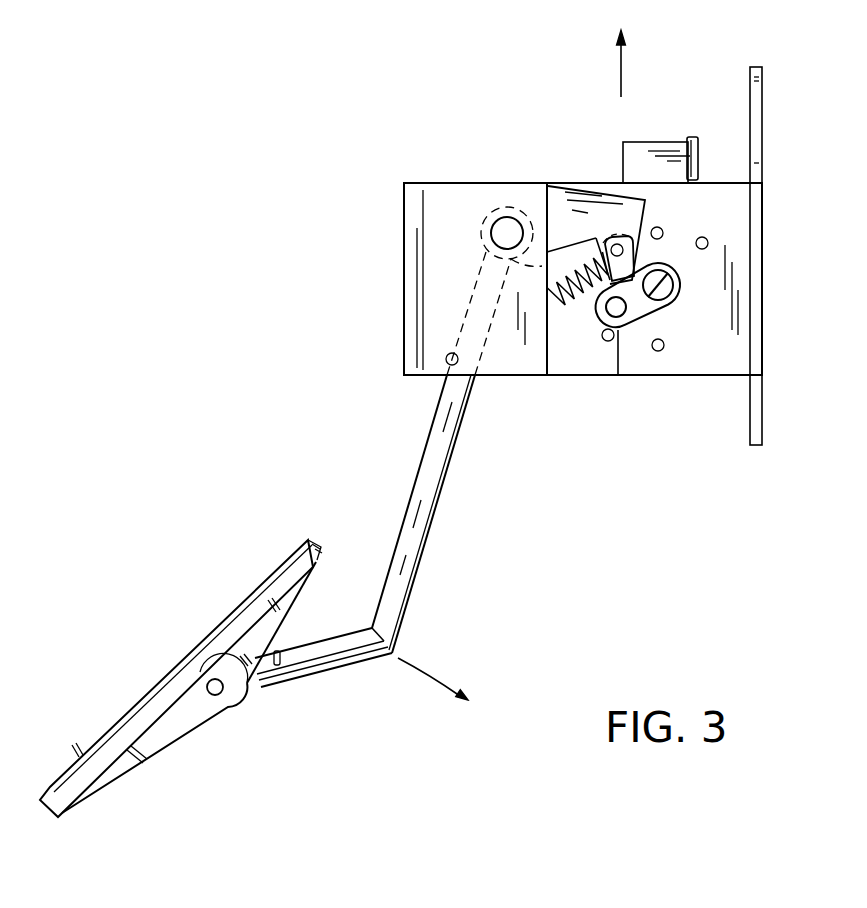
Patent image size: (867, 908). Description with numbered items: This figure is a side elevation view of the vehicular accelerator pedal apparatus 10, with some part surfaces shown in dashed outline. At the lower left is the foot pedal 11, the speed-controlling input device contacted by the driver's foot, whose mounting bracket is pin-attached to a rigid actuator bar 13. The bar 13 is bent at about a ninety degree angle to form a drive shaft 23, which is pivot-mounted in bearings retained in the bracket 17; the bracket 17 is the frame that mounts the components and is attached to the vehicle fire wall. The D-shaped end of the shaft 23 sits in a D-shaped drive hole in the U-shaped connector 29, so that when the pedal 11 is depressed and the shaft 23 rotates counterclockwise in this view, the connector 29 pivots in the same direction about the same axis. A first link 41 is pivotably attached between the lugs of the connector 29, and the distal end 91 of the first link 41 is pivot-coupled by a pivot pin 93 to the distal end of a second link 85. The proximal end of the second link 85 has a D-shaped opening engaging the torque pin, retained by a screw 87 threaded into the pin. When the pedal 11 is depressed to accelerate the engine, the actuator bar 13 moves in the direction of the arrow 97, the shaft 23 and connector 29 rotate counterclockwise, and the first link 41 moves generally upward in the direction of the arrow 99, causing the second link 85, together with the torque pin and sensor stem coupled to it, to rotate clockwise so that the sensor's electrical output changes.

The vehicular accelerator pedal apparatus 10 is at (352, 275).
The foot pedal 11 is at (185, 654).
The actuator bar 13 is at (408, 592).
The bracket 17 is at (727, 372).
The drive shaft 23 is at (507, 226).
The U-shaped connector 29 is at (576, 202).
The first link 41 is at (608, 284).
The second link 85 is at (641, 332).
The screw 87 is at (665, 290).
The distal end of first link 91 is at (618, 375).
The pivot pin 93 is at (605, 330).
The arrow 97 is at (425, 682).
The arrow 99 is at (621, 68).